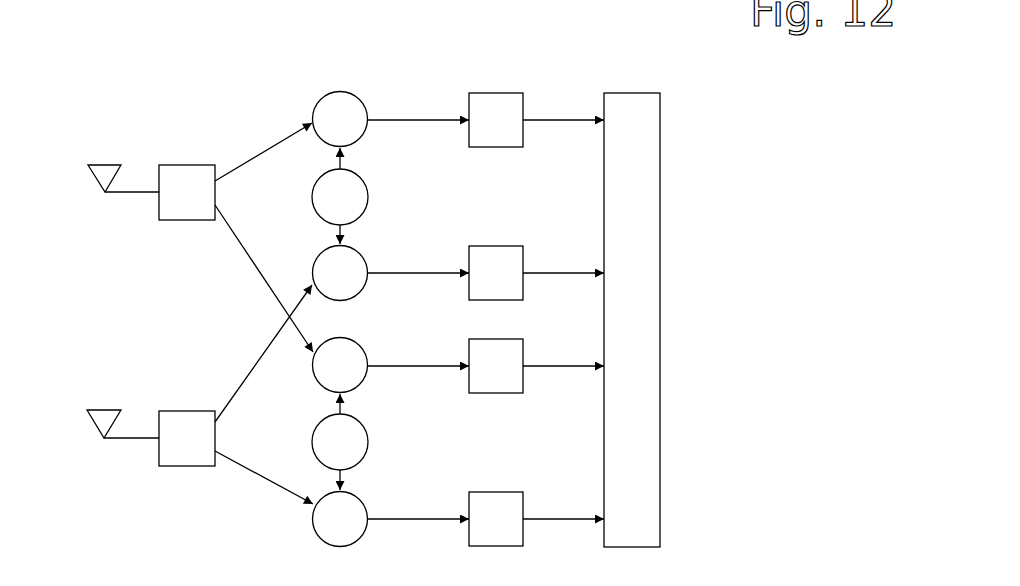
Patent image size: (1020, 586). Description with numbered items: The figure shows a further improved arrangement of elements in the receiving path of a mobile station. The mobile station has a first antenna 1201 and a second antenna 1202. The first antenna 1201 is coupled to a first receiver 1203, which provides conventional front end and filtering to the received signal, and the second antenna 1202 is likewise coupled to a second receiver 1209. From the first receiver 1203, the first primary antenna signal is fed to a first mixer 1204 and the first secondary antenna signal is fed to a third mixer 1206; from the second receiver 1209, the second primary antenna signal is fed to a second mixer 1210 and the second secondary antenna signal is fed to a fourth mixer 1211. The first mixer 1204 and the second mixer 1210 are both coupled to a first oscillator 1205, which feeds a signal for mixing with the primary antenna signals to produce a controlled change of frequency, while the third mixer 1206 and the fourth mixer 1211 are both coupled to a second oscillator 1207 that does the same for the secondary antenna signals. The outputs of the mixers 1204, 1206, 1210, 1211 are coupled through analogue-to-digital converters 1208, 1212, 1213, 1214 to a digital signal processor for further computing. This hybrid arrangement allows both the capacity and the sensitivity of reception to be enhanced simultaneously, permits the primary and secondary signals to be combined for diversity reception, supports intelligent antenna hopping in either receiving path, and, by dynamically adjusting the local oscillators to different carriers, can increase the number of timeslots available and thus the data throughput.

The first antenna 1201 is at (105, 165).
The second antenna 1202 is at (105, 410).
The first receiver 1203 is at (185, 165).
The second receiver 1209 is at (185, 411).
The first mixer 1204 is at (357, 100).
The second mixer 1210 is at (357, 253).
The third mixer 1206 is at (357, 345).
The fourth mixer 1211 is at (357, 498).
The first oscillator 1205 is at (358, 178).
The second oscillator 1207 is at (358, 422).
The analogue-to-digital converter 1208 is at (495, 93).
The analogue-to-digital converter 1212 is at (495, 246).
The analogue-to-digital converter 1213 is at (495, 339).
The analogue-to-digital converter 1214 is at (495, 492).